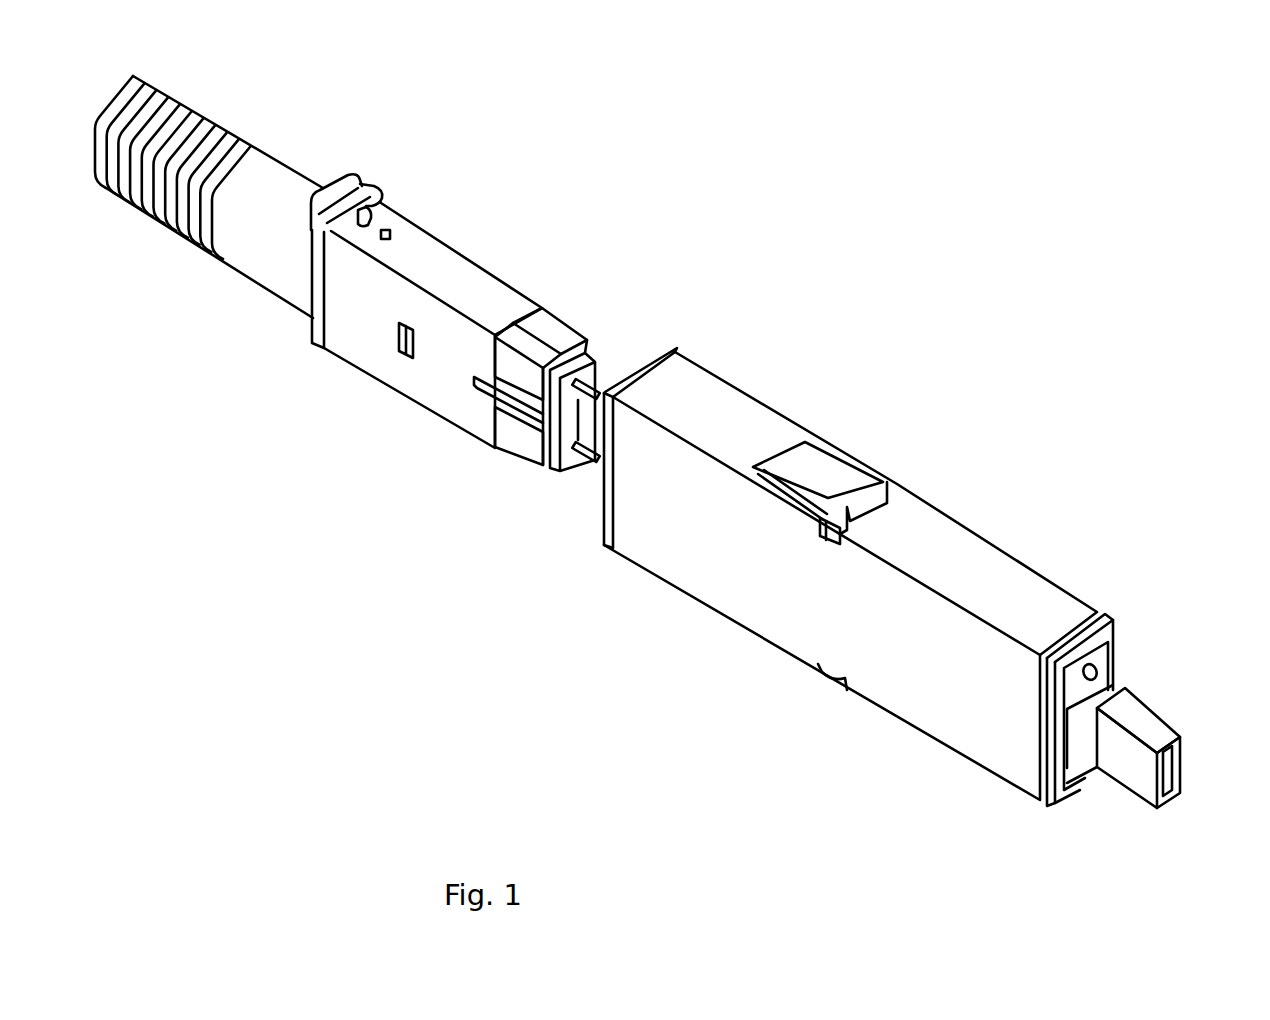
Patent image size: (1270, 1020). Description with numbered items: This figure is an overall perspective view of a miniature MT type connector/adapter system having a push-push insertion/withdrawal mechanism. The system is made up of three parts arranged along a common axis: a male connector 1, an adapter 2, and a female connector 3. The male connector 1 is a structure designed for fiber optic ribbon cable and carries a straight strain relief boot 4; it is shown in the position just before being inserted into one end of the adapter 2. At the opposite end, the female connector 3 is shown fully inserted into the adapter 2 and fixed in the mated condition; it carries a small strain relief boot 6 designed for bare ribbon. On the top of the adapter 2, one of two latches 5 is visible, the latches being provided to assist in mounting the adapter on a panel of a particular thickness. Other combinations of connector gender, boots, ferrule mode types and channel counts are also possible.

The male connector 1 is at (423, 263).
The adapter 2 is at (705, 397).
The female connector 3 is at (1113, 682).
The straight strain relief boot 4 is at (268, 182).
The latch 5 is at (817, 469).
The small strain relief boot 6 is at (1157, 730).